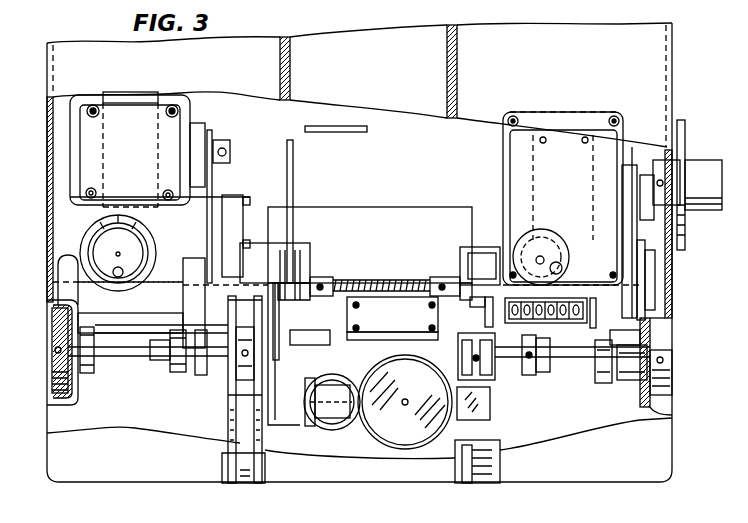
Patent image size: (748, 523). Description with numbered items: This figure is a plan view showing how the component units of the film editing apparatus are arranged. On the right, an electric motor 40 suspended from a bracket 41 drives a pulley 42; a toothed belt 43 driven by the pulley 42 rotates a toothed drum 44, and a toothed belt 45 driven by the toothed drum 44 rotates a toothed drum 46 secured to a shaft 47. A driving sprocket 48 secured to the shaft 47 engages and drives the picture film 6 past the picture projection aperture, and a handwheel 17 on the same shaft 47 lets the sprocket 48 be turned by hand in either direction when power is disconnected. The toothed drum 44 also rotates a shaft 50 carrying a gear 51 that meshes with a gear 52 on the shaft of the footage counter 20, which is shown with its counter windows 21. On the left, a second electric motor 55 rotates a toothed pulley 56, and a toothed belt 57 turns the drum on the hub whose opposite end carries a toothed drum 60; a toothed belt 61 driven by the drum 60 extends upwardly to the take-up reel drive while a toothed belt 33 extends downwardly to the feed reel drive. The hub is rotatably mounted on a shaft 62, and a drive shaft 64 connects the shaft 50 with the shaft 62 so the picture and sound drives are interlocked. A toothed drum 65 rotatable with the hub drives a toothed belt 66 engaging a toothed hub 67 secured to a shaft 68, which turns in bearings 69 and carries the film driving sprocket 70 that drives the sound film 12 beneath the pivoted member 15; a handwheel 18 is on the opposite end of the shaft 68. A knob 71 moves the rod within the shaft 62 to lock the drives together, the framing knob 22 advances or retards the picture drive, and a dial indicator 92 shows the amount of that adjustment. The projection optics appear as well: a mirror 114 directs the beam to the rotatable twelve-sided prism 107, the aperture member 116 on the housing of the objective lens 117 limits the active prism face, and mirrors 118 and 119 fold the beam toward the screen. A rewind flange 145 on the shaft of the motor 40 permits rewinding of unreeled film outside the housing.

The picture film 6 is at (497, 445).
The sound film 12 is at (240, 428).
The pivoted member 15 is at (340, 410).
The handwheel 17 is at (672, 376).
The handwheel 18 is at (47, 373).
The footage counter 20 is at (544, 323).
The counter wheel 21 is at (566, 323).
The framing knob 22 is at (133, 252).
The toothed belt 33 is at (279, 346).
The electric motor 40 is at (655, 220).
The bracket 41 is at (606, 252).
The pulley 42 is at (642, 160).
The toothed belt 43 is at (660, 255).
The toothed drum 44 is at (655, 272).
The toothed belt 45 is at (640, 337).
The toothed drum 46 is at (632, 380).
The shaft 47 is at (572, 358).
The driving sprocket 48 is at (490, 368).
The shaft 50 is at (450, 280).
The gear 51 is at (490, 276).
The gear 52 is at (487, 312).
The electric motor 55 is at (190, 118).
The toothed pulley 56 is at (222, 142).
The toothed belt 57 is at (213, 180).
The toothed drum 60 is at (285, 298).
The toothed belt 61 is at (293, 168).
The shaft 62 is at (331, 297).
The drive shaft 64 is at (391, 280).
The toothed drum 65 is at (185, 310).
The toothed belt 66 is at (195, 333).
The toothed hub 67 is at (204, 372).
The shaft 68 is at (148, 360).
The bearings 69 is at (92, 372).
The film driving sprocket 70 is at (228, 396).
The knob 71 is at (47, 290).
The dial indicator 92 is at (143, 232).
The twelve-sided prism 107 is at (395, 432).
The mirror 114 is at (490, 404).
The member 116 is at (333, 374).
The objective lens 117 is at (322, 420).
The mirror 118 is at (305, 403).
The mirror 119 is at (356, 132).
The rewind flange 145 is at (700, 170).